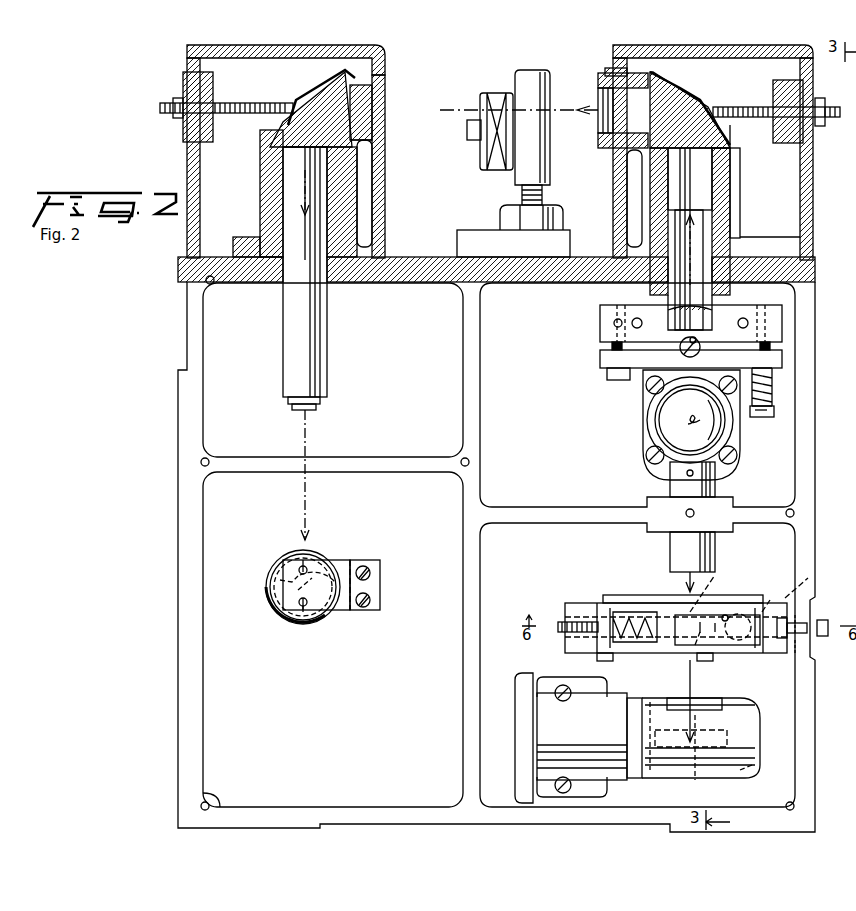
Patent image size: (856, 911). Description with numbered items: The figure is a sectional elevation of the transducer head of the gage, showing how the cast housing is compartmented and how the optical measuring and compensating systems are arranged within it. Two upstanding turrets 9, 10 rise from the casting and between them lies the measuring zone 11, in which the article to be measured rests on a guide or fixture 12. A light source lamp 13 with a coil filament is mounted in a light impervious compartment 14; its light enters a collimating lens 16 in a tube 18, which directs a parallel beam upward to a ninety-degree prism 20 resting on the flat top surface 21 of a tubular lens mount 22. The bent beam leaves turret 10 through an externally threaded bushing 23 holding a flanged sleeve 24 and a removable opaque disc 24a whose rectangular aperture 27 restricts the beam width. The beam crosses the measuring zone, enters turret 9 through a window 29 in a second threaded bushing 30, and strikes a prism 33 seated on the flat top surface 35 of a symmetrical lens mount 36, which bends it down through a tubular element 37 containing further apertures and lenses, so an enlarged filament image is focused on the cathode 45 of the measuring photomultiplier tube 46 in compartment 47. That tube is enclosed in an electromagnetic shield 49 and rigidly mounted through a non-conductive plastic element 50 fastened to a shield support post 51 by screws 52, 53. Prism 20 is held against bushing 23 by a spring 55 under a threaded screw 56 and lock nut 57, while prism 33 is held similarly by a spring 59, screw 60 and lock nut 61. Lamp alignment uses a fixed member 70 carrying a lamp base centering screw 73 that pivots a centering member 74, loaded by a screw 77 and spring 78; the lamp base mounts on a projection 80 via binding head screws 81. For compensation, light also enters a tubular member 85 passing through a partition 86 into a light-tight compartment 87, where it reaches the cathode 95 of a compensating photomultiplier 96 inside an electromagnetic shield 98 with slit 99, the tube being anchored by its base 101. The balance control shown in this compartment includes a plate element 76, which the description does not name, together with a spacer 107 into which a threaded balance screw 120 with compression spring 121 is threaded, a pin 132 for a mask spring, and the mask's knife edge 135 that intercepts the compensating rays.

The turret 9 is at (612, 205).
The turret 10 is at (386, 205).
The measuring zone 11 is at (470, 73).
The guide or fixture 12 is at (484, 160).
The light source lamp 13 is at (660, 425).
The light impervious compartment 14 is at (533, 436).
The collimating lens 16 is at (712, 312).
The tube 18 is at (705, 210).
The 90°–45° prism 20 is at (740, 150).
The flat top surface 21 is at (735, 222).
The tubular lens mount 22 is at (732, 130).
The externally threaded bushing 23 is at (608, 72).
The flanged sleeve 24 is at (597, 128).
The removable opaque disc 24a is at (600, 88).
The rectangular aperture 27 is at (600, 148).
The window 29 is at (386, 100).
The externally threaded bushing 30 is at (386, 143).
The 90°–45° prism 33 is at (272, 165).
The flat top surface 35 is at (262, 143).
The tubular lens mount 36 is at (262, 205).
The tubular element 37 is at (290, 340).
The cathode 45 is at (290, 585).
The measuring photomultiplier tube 46 is at (270, 572).
The compartment 47 is at (395, 508).
The electromagnetic shield 49 is at (308, 557).
The non-conductive plastic element 50 is at (340, 612).
The shield support post 51 is at (380, 602).
The screw 52 is at (301, 612).
The screw 53 is at (371, 572).
The spring 55 is at (688, 92).
The threaded screw 56 is at (806, 100).
The lock nut 57 is at (820, 120).
The spring 59 is at (312, 92).
The threaded screw 60 is at (237, 103).
The lock nut 61 is at (178, 118).
The fixed member 70 is at (600, 322).
The lamp base centering screw 73 is at (610, 380).
The lamp base centering member 74 is at (600, 357).
The cover plate 76 is at (612, 595).
The screw 77 is at (760, 418).
The spring 78 is at (775, 398).
The projection 80 is at (645, 405).
The binding head screws 81 is at (735, 470).
The tubular member 85 is at (670, 546).
The partition 86 is at (535, 508).
The light-tight compartment 87 is at (531, 558).
The cathode 95 is at (695, 780).
The compensating photomultiplier 96 is at (745, 778).
The electromagnetic shield 98 is at (748, 700).
The slit 99 is at (715, 698).
The base 101 is at (605, 680).
The spacer 107 is at (597, 640).
The threaded balance screw 120 is at (560, 622).
The compression spring 121 is at (630, 612).
The pin 132 is at (788, 603).
The knife edge 135 is at (717, 607).